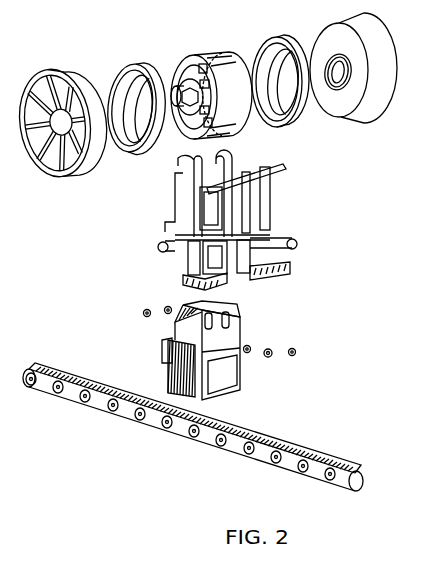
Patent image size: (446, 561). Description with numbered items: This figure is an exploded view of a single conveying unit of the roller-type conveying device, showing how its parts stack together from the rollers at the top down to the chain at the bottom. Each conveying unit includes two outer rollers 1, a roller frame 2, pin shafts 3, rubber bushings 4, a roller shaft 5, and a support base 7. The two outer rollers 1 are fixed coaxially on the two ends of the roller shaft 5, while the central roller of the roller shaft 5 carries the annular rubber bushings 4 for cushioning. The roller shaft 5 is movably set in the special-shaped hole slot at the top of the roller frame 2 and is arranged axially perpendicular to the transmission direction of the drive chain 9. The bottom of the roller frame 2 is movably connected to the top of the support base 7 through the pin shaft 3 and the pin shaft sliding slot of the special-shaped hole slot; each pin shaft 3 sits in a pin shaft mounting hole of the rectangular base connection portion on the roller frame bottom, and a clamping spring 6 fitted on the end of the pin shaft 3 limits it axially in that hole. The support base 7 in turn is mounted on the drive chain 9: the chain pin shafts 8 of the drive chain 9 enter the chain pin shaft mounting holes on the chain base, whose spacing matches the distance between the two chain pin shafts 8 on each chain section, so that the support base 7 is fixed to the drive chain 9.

The outer roller 1 is at (85, 82).
The roller frame 2 is at (185, 230).
The pin shaft 3 is at (253, 350).
The rubber bushing 4 is at (140, 152).
The roller shaft 5 is at (205, 56).
The clamping spring 6 is at (167, 305).
The support base 7 is at (166, 377).
The chain pin shaft 8 is at (191, 438).
The drive chain 9 is at (318, 453).